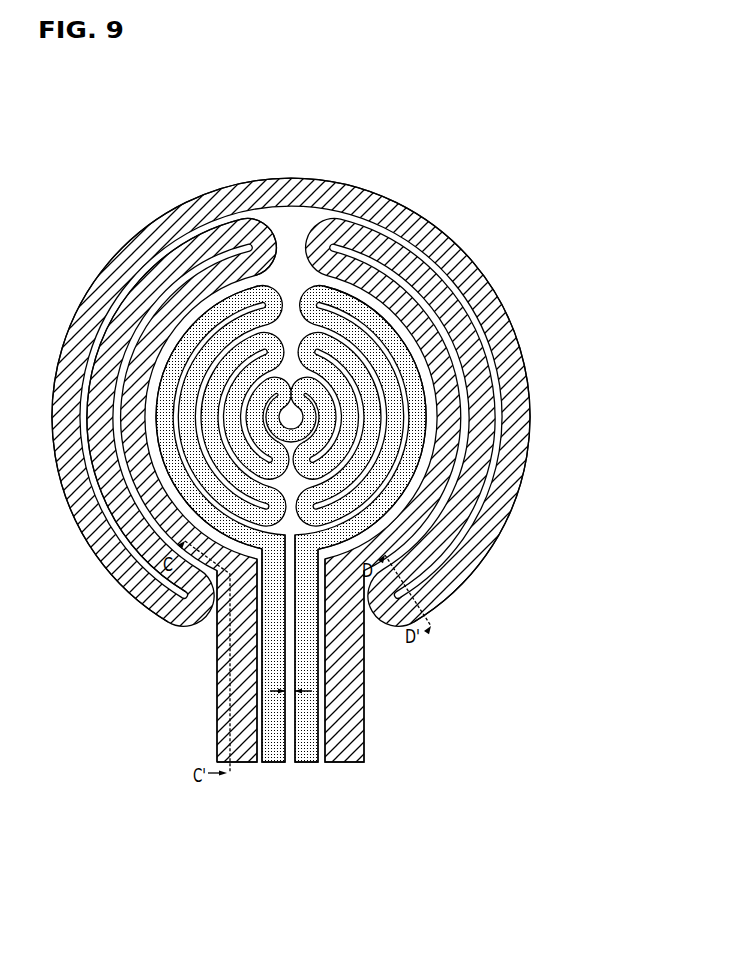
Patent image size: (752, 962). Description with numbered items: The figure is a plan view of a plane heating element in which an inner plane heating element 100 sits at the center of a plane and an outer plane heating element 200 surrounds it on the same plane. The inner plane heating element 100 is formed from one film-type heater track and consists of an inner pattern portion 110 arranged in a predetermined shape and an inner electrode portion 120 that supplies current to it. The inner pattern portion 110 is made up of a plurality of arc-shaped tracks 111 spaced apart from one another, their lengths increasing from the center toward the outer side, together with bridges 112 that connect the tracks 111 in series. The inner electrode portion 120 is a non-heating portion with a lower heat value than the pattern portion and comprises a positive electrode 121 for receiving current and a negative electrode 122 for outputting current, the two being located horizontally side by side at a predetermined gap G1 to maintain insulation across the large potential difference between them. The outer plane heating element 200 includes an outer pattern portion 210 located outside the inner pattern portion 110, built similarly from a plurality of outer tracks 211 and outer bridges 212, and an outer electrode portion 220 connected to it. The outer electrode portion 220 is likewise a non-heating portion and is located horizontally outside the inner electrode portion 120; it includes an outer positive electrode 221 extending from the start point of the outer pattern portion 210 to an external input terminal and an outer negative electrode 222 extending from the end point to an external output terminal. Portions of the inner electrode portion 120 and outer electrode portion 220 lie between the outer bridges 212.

The inner plane heating element 100 is at (421, 331).
The inner pattern portion 110 is at (400, 124).
The arc-shaped tracks 111 is at (392, 318).
The bridges 112 is at (310, 283).
The inner electrode portion 120 is at (325, 805).
The positive electrode 121 is at (272, 763).
The negative electrode 122 is at (310, 763).
The outer plane heating element 200 is at (540, 392).
The outer pattern portion 210 is at (270, 124).
The outer tracks 211 is at (204, 232).
The outer bridges 212 is at (262, 222).
The outer electrode portion 220 is at (352, 877).
The outer positive electrode 221 is at (240, 766).
The outer negative electrode 222 is at (343, 766).
The gap between lead lines G1 is at (291, 691).